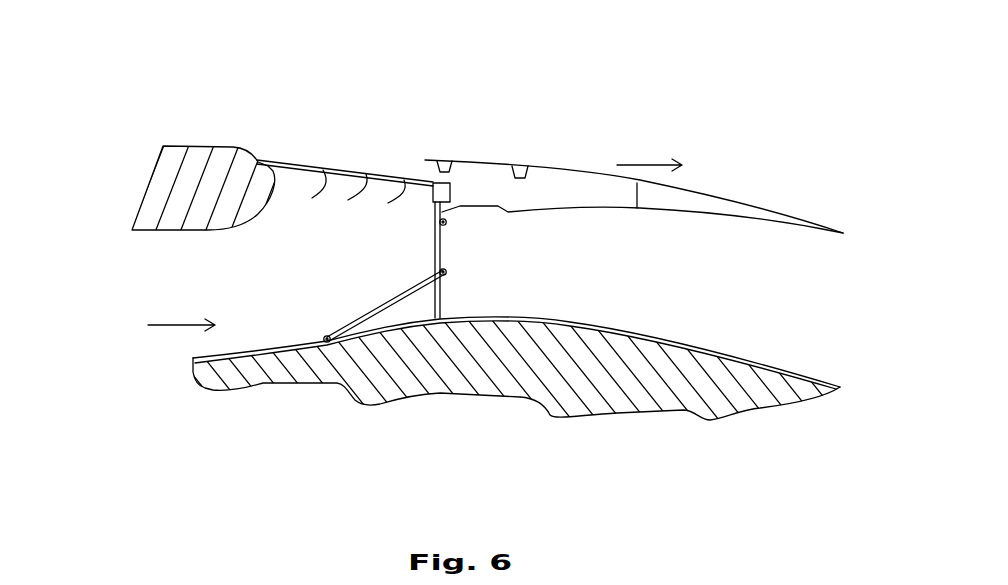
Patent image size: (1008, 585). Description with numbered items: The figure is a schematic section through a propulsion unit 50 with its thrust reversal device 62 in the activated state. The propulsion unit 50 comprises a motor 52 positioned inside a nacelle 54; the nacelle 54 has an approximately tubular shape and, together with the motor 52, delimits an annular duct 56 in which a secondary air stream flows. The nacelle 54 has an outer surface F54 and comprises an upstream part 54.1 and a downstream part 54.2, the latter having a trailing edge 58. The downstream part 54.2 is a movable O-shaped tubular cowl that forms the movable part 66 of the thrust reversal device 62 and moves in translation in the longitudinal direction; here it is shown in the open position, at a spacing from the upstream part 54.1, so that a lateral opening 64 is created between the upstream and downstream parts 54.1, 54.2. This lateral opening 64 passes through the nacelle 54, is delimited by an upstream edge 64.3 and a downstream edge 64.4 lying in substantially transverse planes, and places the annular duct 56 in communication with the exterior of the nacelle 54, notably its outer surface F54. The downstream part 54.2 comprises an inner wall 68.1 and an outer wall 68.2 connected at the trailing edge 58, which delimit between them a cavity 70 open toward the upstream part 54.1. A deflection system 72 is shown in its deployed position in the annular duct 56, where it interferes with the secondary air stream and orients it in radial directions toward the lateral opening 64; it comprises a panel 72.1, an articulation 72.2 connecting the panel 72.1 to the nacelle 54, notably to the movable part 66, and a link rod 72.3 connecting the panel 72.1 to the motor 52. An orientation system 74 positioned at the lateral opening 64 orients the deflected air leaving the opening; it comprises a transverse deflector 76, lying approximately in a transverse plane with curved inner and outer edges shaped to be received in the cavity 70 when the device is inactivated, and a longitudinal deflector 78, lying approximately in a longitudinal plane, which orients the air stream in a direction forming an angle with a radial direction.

The propulsion unit 50 is at (106, 151).
The motor 52 is at (709, 419).
The nacelle 54 is at (177, 145).
The outer surface F54 is at (197, 147).
The upstream part 54.1 is at (187, 198).
The downstream part 54.2 is at (553, 168).
The annular duct 56 is at (186, 283).
The trailing edge 58 is at (847, 233).
The thrust reversal device 62 is at (372, 146).
The lateral opening 64 is at (328, 157).
The upstream edge 64.3 is at (270, 158).
The downstream edge 64.4 is at (430, 186).
The movable part 66 is at (696, 188).
The inner wall 68.1 is at (583, 213).
The outer wall 68.2 is at (498, 163).
The cavity 70 is at (573, 188).
The deflection system 72 is at (454, 300).
The panel 72.1 is at (433, 245).
The articulation 72.2 is at (447, 222).
The link rod 72.3 is at (365, 312).
The orientation system 74 is at (271, 238).
The transverse deflector 76 is at (387, 204).
The longitudinal deflector 78 is at (298, 159).